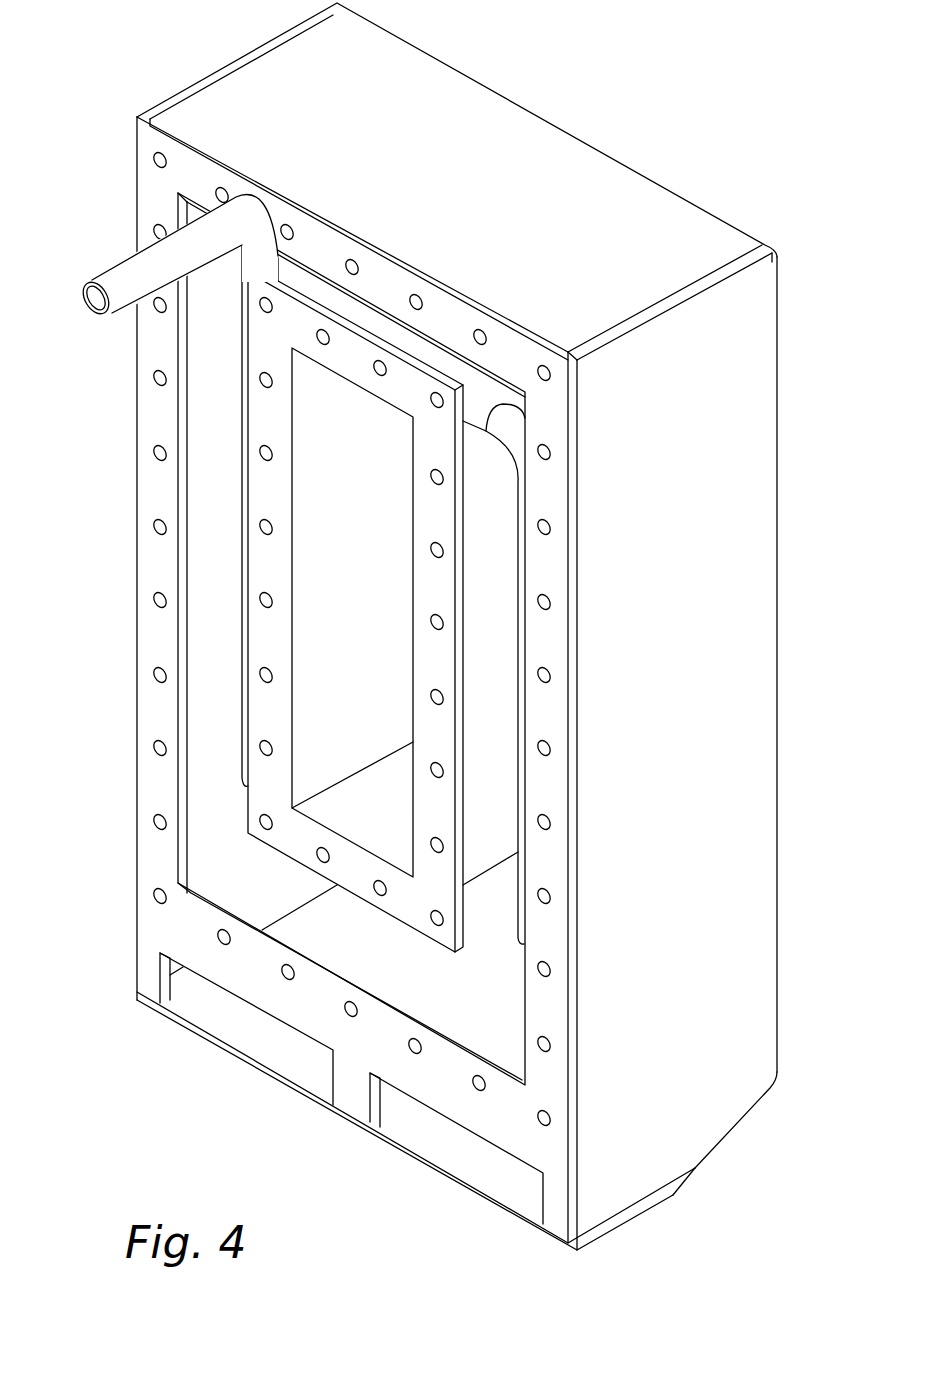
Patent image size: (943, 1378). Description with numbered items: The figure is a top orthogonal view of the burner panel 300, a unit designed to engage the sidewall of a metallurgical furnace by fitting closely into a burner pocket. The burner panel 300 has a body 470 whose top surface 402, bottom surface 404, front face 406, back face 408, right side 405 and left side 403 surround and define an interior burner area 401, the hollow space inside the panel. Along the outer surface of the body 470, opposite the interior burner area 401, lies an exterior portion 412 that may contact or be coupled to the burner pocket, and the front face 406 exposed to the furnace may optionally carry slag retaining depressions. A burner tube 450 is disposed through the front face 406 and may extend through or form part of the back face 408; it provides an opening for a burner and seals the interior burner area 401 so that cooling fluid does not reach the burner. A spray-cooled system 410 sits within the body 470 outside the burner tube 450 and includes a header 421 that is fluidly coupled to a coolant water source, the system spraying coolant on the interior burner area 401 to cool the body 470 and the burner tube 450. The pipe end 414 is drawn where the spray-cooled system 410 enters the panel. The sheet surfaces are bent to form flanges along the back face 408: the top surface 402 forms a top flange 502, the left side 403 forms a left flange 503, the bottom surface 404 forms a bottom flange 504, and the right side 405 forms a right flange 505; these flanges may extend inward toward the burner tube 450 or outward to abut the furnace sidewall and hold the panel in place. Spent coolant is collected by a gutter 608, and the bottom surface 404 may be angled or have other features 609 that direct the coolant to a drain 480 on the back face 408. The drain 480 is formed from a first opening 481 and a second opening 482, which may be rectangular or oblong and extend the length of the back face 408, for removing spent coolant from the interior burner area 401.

The burner panel 300 is at (146, 34).
The interior burner area 401 is at (213, 576).
The top surface 402 is at (432, 100).
The left side 403 is at (738, 475).
The bottom surface 404 is at (612, 1230).
The right side 405 is at (134, 373).
The front face 406 is at (778, 598).
The back face 408 is at (156, 471).
The spray-cooled system 410 is at (126, 268).
The exterior portion 412 is at (738, 816).
The pipe end opening 414 is at (82, 299).
The header 421 is at (238, 656).
The burner tube 450 is at (352, 612).
The body 470 is at (622, 156).
The drain 480 is at (274, 1113).
The first opening 481 is at (242, 1030).
The second opening 482 is at (458, 1155).
The top flange 502 is at (385, 285).
The left flange 503 is at (551, 717).
The bottom flange 504 is at (324, 992).
The right flange 505 is at (160, 713).
The gutter 608 is at (390, 917).
The features 609 is at (727, 1135).